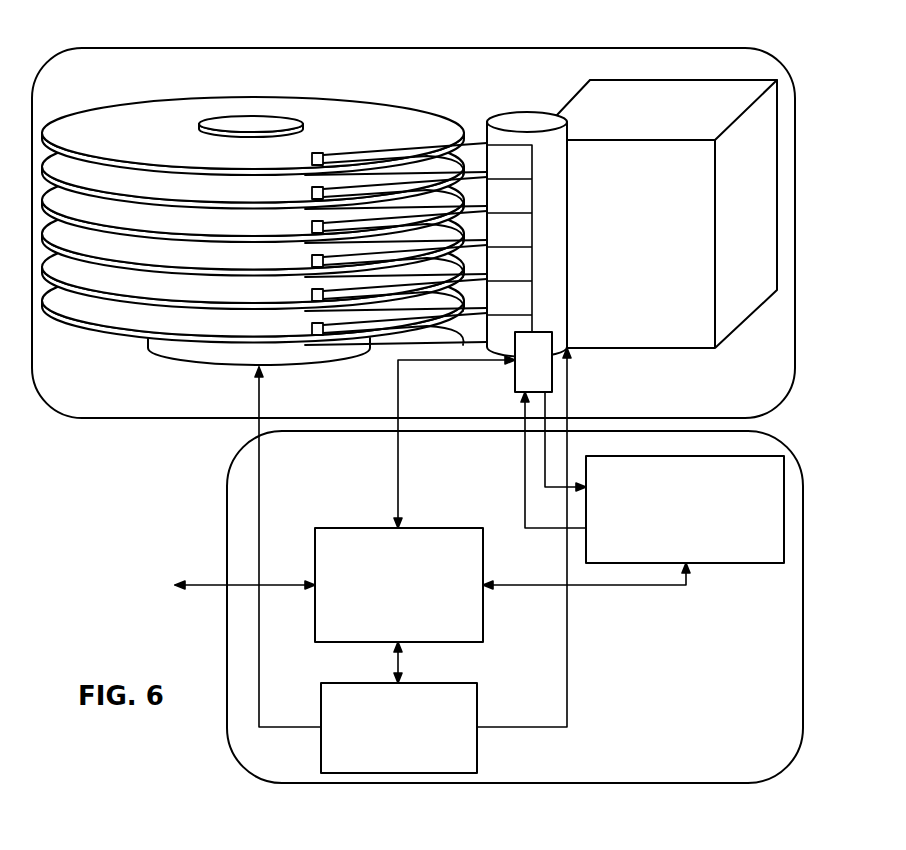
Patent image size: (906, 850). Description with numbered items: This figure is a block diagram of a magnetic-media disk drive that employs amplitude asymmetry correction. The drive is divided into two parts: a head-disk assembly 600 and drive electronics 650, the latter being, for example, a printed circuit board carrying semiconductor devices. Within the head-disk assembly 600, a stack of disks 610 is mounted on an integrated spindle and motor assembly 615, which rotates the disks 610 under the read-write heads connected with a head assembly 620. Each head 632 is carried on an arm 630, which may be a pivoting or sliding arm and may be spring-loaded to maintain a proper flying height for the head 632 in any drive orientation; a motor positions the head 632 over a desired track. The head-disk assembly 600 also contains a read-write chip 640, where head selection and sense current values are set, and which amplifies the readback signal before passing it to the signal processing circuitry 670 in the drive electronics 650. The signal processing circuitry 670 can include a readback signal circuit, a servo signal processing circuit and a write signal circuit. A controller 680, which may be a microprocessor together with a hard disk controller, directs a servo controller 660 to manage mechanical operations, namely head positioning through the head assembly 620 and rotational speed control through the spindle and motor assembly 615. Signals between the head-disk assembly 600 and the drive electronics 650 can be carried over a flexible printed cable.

The head-disk assembly 600 is at (748, 399).
The disks 610 is at (146, 88).
The integrated spindle and motor assembly 615 is at (205, 367).
The head assembly 620 is at (543, 95).
The arm 630 is at (415, 140).
The head 632 is at (318, 153).
The read-write chip 640 is at (513, 382).
The drive electronics 650 is at (765, 764).
The servo controller 660 is at (457, 683).
The signal processing circuitry 670 is at (698, 563).
The controller 680 is at (408, 528).